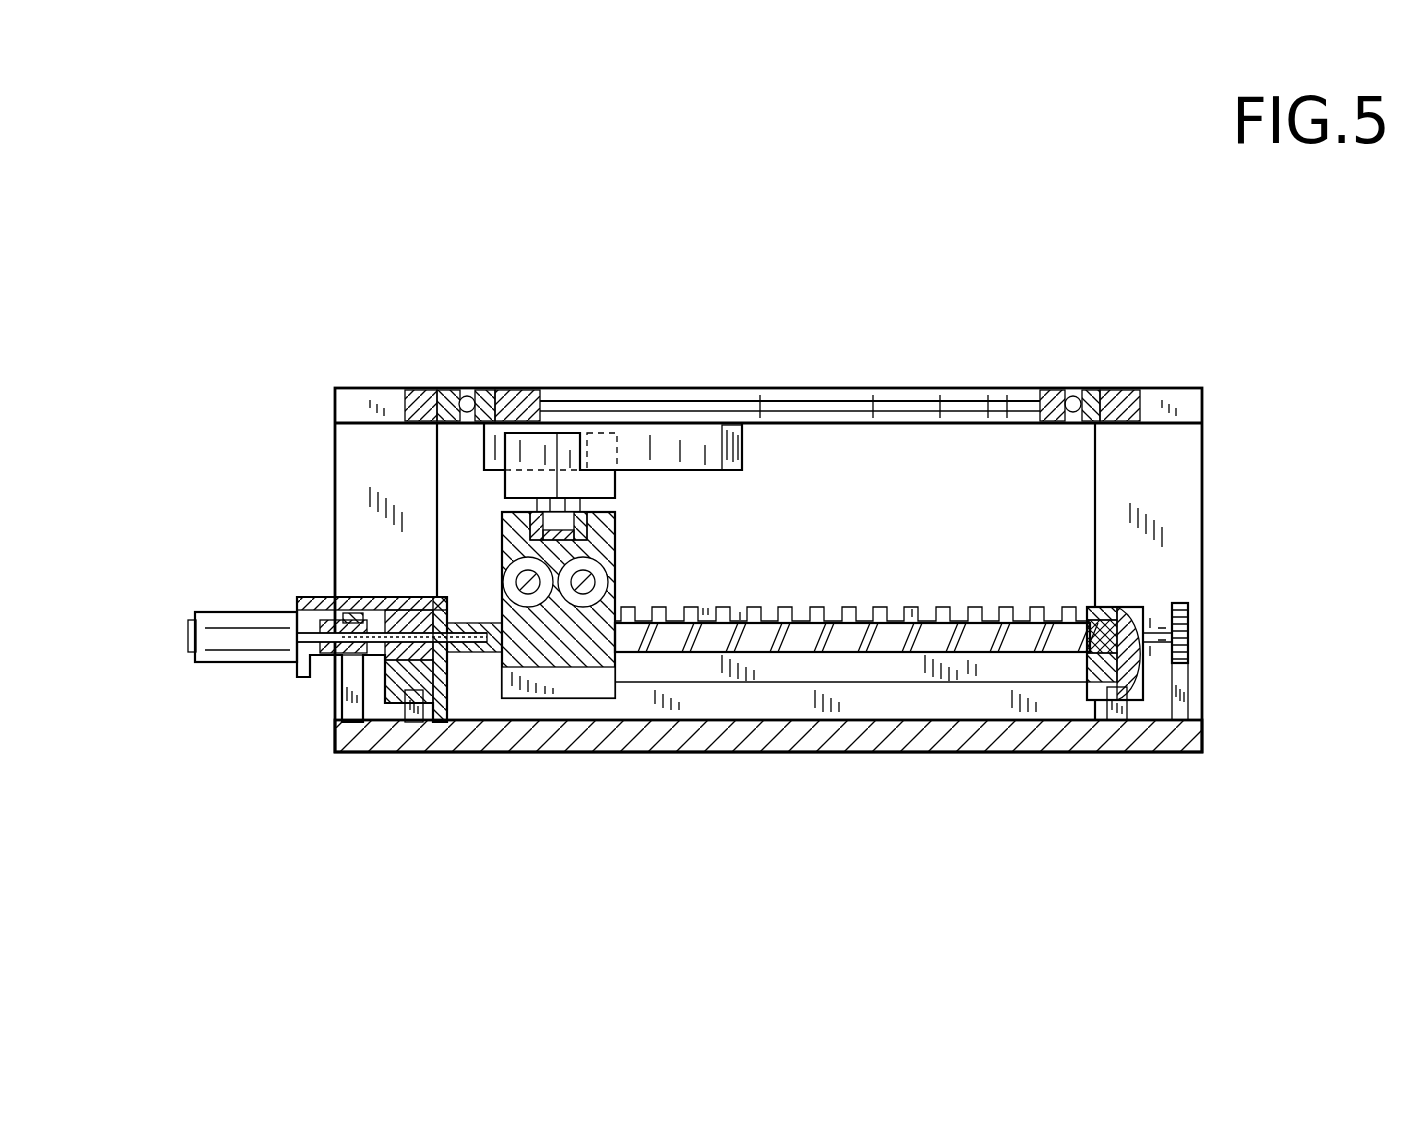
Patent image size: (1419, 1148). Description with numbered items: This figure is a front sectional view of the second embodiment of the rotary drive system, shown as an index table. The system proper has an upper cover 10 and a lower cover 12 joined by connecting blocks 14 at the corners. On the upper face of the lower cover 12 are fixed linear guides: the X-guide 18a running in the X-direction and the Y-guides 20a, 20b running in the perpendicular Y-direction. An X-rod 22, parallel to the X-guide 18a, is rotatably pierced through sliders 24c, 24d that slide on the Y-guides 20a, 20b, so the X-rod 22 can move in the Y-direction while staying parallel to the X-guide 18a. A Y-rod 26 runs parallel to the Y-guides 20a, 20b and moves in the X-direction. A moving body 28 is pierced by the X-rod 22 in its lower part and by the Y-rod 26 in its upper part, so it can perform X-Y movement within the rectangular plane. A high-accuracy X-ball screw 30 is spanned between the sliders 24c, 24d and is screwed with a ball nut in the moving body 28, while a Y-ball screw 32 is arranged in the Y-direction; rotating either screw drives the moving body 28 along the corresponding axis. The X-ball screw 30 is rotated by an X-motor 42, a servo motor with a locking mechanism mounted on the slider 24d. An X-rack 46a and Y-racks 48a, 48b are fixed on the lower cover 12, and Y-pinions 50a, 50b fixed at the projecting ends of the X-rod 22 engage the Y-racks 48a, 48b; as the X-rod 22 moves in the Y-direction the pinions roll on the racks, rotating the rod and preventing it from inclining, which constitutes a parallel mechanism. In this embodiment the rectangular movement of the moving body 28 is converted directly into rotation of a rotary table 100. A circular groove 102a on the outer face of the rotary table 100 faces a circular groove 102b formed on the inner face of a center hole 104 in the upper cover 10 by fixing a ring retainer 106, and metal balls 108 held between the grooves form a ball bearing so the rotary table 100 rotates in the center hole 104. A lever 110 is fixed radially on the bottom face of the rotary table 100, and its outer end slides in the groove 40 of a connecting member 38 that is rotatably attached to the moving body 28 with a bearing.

The upper cover 10 is at (353, 390).
The lower cover 12 is at (1188, 737).
The connecting blocks 14 is at (350, 440).
The X-guide 18a is at (912, 676).
The Y-guide 20a is at (1125, 703).
The Y-guide 20b is at (393, 712).
The X-rod 22 is at (1172, 622).
The slider 24c is at (1107, 607).
The slider 24d is at (452, 670).
The Y-rod 26 is at (510, 580).
The moving body 28 is at (622, 523).
The X-ball screw 30 is at (830, 650).
The Y-ball screw 32 is at (595, 580).
The connecting member 38 is at (542, 430).
The groove 40 is at (600, 433).
The X-motor 42 is at (293, 663).
The X-rack 46a is at (1020, 612).
The Y-rack 48a is at (1182, 677).
The Y-rack 48b is at (342, 700).
The Y-pinion 50a is at (1180, 635).
The Y-pinion 50b is at (342, 660).
The rotary table 100 is at (718, 388).
The circular groove 102a is at (915, 397).
The circular groove 102b is at (467, 412).
The center hole 104 is at (1075, 388).
The ring retainer 106 is at (1100, 388).
The ball bearings 108 is at (467, 393).
The lever 110 is at (735, 443).